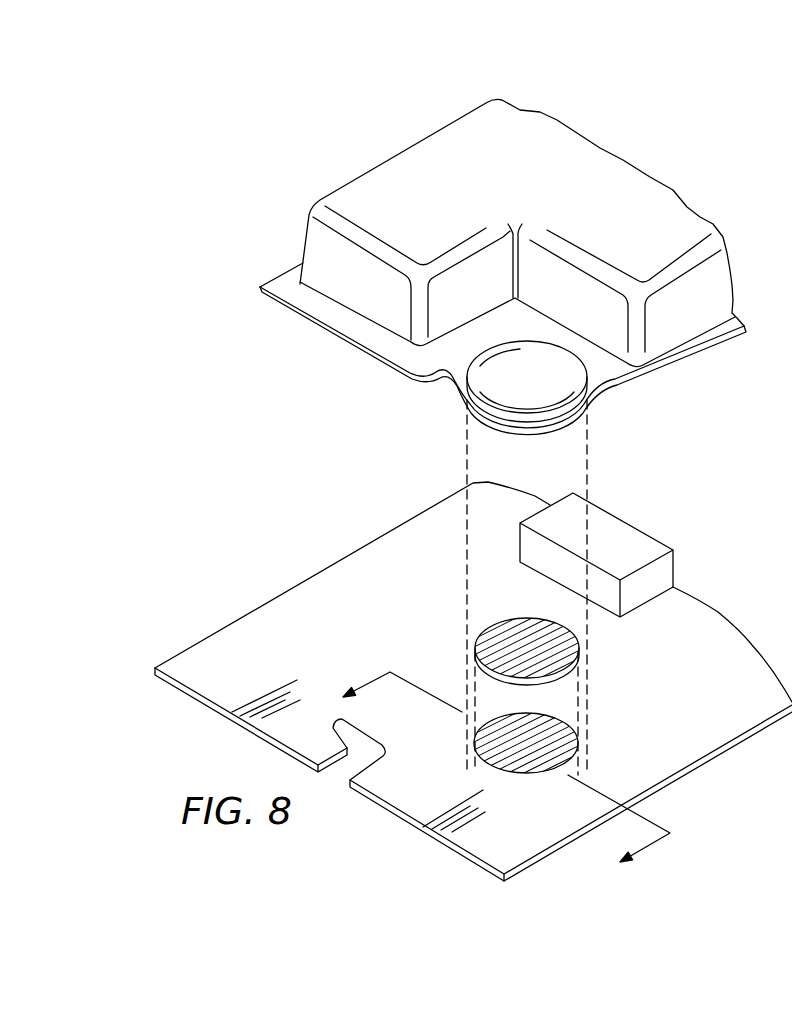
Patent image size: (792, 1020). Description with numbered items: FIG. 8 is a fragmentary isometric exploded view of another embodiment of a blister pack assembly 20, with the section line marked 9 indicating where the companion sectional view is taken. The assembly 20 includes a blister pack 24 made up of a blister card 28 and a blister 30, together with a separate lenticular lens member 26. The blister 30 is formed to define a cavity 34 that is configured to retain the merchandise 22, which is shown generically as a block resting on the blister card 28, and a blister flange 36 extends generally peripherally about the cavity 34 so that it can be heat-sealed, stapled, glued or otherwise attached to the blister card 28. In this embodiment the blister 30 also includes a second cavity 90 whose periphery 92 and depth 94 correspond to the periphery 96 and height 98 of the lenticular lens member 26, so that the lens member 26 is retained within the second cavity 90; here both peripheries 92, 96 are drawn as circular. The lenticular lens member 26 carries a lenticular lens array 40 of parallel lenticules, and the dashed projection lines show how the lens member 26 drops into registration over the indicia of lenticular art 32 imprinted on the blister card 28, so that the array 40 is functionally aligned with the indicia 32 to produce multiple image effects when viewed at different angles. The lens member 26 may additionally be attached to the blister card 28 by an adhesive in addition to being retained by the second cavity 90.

The blister pack assembly 20 is at (350, 110).
The blister pack 24 is at (390, 112).
The blister 30 is at (340, 188).
The cavity 34 is at (602, 167).
The blister flange 36 is at (342, 331).
The second cavity 90 is at (496, 384).
The periphery 92 is at (587, 385).
The depth 94 is at (580, 427).
The lenticular lens member 26 is at (438, 600).
The lenticular lens array 40 is at (473, 588).
The blister card 28 is at (695, 773).
The merchandise 22 is at (667, 570).
The periphery 96 is at (577, 650).
The height 98 is at (553, 677).
The indicia of lenticular art 32 is at (540, 757).
The section line 9- 9 is at (506, 767).